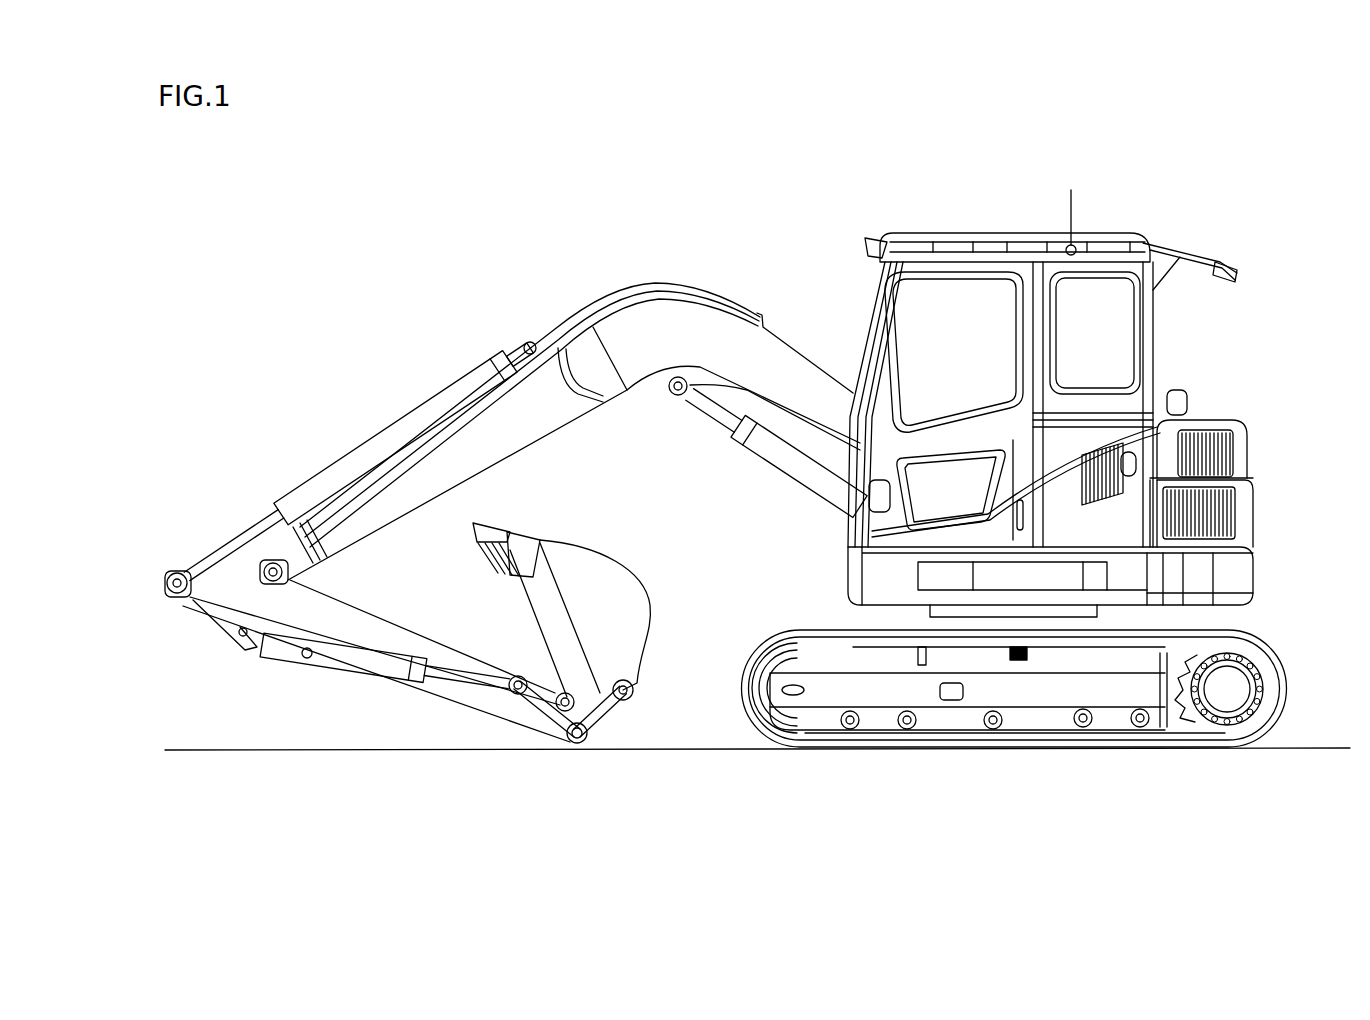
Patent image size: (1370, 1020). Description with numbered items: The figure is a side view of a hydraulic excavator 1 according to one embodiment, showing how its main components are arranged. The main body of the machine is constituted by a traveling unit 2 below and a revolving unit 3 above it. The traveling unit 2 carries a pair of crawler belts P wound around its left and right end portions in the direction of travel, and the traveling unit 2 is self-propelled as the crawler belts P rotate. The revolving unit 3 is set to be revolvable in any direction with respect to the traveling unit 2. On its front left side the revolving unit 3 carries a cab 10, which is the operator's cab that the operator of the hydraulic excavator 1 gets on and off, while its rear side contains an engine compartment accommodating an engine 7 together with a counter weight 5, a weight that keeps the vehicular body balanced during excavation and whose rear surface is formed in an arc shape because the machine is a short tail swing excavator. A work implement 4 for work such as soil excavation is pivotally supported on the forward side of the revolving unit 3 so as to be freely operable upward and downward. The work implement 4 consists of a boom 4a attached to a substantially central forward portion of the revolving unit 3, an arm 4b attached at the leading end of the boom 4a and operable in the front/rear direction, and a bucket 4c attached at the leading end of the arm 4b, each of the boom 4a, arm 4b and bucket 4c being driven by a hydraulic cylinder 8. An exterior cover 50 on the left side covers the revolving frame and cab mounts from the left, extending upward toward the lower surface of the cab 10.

The hydraulic excavator 1 is at (1203, 160).
The traveling unit 2 is at (722, 703).
The revolving unit 3 is at (850, 568).
The work implement 4 is at (673, 263).
The boom 4a is at (470, 443).
The arm 4b is at (337, 622).
The bucket 4c is at (601, 577).
The counter weight 5 is at (1243, 548).
The engine 7 is at (1240, 468).
The hydraulic cylinder 8 is at (363, 457).
The cab 10 is at (868, 213).
The exterior cover 50 is at (895, 580).
The crawler belts P is at (1262, 652).